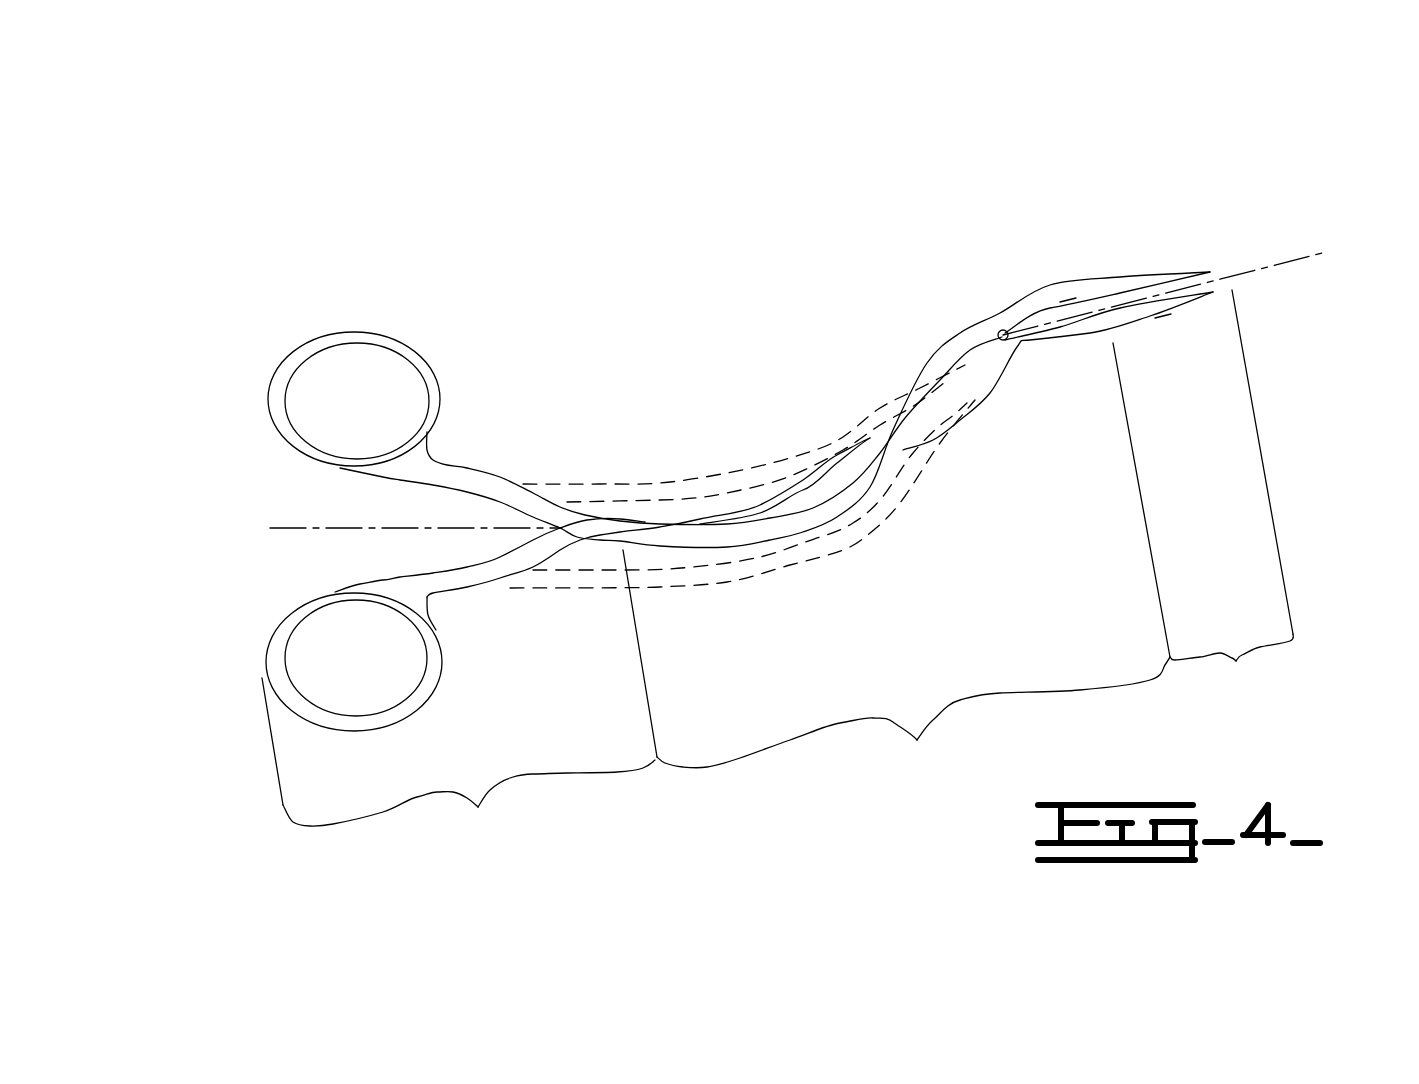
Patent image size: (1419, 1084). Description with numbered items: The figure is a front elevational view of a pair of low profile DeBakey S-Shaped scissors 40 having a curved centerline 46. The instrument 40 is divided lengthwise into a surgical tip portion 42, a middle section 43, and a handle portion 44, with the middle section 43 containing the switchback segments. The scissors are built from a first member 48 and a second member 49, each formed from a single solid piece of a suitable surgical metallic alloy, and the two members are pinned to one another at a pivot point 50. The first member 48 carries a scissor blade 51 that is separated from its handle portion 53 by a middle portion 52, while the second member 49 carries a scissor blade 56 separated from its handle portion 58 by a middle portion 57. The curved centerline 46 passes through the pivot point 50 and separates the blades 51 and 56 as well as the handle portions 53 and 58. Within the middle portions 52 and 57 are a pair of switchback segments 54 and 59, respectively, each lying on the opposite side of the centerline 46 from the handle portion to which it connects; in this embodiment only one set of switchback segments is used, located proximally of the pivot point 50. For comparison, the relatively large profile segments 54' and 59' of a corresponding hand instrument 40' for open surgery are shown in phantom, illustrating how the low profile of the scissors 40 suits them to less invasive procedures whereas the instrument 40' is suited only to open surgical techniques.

The DeBakey S-Shaped scissors 40 is at (714, 331).
The corresponding hand instrument for open surgery 40' is at (695, 378).
The surgical tip portion 42 is at (1203, 496).
The middle section 43 is at (896, 667).
The handle portion 44 is at (458, 762).
The curved centerline 46 is at (322, 530).
The first member 48 is at (1068, 300).
The second member 49 is at (1072, 282).
The pivot point 50 is at (1003, 330).
The scissor blade 51 is at (1163, 323).
The middle portion 52 is at (927, 360).
The handle portion 53 is at (323, 333).
The switchback segment 54 is at (666, 540).
The relatively large profile segment 54' is at (742, 461).
The scissor blade 56 is at (1153, 273).
The middle portion 57 is at (1013, 350).
The handle portion 58 is at (310, 595).
The switchback segment 59 is at (551, 439).
The relatively large profile segment 59' is at (750, 550).